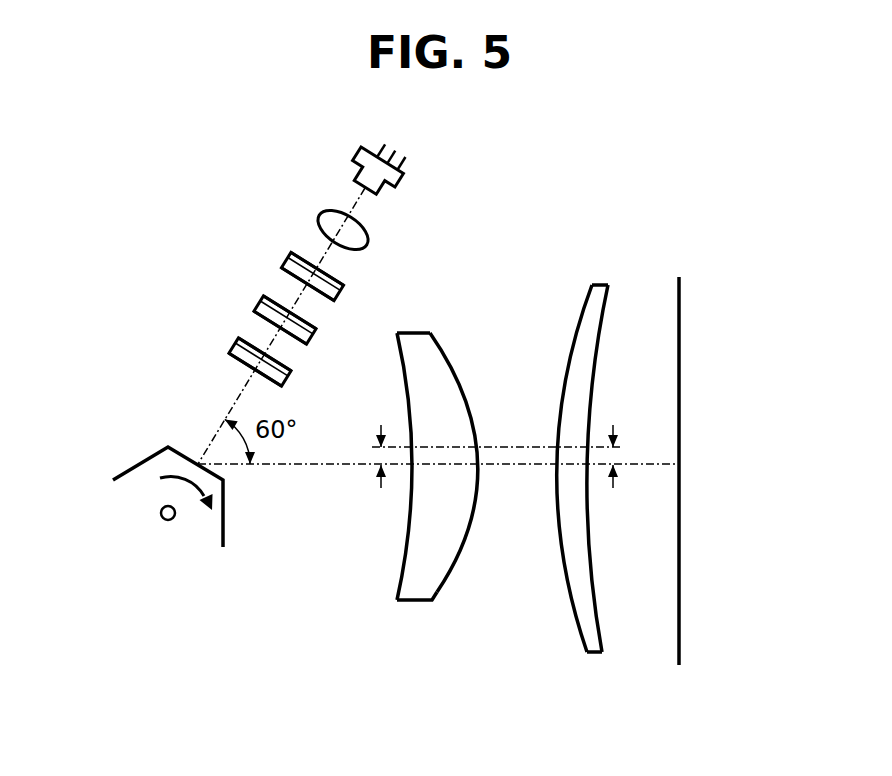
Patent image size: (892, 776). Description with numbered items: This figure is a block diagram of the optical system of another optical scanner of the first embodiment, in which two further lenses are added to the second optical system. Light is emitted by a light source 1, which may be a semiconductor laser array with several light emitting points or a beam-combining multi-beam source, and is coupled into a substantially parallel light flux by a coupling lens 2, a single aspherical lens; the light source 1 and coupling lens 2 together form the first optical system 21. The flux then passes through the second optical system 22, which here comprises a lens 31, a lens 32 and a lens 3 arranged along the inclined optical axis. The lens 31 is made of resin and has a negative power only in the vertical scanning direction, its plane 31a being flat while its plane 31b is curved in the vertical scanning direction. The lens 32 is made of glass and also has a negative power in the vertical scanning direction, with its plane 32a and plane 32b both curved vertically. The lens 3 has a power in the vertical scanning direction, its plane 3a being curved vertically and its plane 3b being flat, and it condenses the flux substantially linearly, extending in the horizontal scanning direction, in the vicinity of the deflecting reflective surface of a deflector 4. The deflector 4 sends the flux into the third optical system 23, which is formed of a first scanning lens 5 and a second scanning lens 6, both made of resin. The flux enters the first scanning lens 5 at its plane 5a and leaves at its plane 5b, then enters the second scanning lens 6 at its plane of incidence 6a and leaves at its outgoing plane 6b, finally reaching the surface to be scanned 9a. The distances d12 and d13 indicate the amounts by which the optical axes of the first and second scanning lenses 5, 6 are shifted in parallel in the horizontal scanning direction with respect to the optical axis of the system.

The light source 1 is at (360, 152).
The coupling lens 2 is at (318, 224).
The lens 3 is at (240, 348).
The plane of the lens 3 3a is at (292, 371).
The plane of the lens 3 3b is at (250, 379).
The deflector 4 is at (125, 472).
The first scanning lens 5 is at (460, 406).
The plane of the first scanning lens 5a is at (403, 563).
The plane of the first scanning lens 5b is at (456, 566).
The second scanning lens 6 is at (564, 364).
The plane of incidence of the second scanning lens 6a is at (577, 628).
The outgoing plane of the second scanning lens 6b is at (599, 592).
The surface to be scanned 9a is at (681, 332).
The first optical system 21 is at (306, 129).
The second optical system 22 is at (226, 219).
The third optical system 23 is at (612, 278).
The lens 31 is at (290, 262).
The plane of the lens 31 31a is at (334, 268).
The plane of the lens 31 31b is at (323, 298).
The lens 32 is at (265, 305).
The plane of the lens 32 32a is at (314, 324).
The plane of the lens 32 32b is at (289, 342).
The distance d12 is at (373, 452).
The distance d13 is at (626, 448).